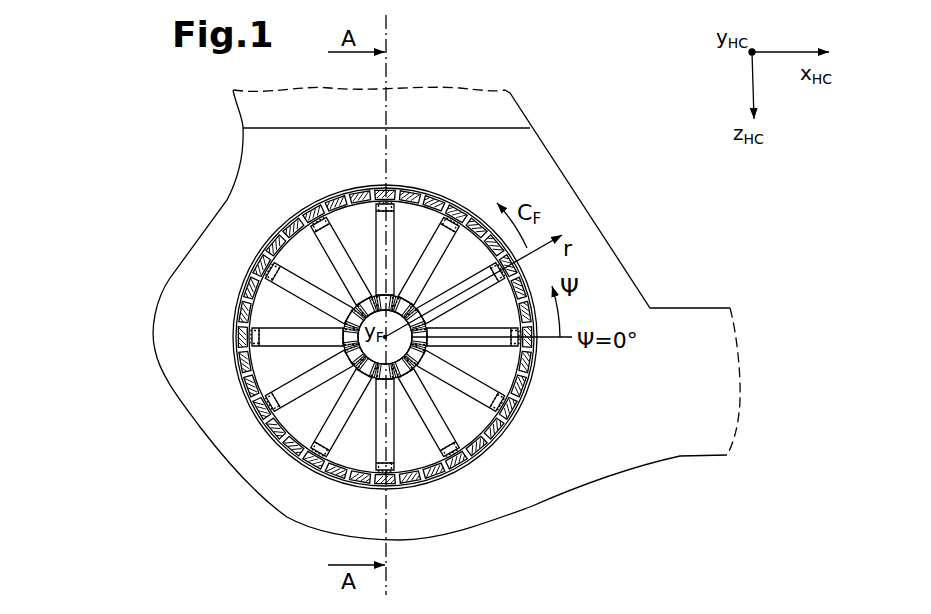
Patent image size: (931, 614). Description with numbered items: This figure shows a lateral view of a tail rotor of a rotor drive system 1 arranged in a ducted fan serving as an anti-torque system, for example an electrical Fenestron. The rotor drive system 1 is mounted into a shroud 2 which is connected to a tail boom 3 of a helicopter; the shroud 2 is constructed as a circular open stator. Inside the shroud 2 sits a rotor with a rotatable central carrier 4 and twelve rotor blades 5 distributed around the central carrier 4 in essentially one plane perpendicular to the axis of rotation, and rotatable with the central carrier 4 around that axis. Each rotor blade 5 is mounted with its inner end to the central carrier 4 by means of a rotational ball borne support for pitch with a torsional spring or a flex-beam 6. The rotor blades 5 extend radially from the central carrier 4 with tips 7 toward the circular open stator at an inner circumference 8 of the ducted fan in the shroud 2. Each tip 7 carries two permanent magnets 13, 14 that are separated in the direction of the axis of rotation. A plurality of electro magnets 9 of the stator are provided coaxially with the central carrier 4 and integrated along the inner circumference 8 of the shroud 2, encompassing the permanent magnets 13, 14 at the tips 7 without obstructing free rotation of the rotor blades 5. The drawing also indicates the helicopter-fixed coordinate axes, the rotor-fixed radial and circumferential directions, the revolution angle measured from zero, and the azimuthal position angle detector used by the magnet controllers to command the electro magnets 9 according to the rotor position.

The rotor drive system 1 is at (168, 137).
The shroud 2 is at (532, 163).
The tail boom 3 is at (700, 322).
The central carrier 4 is at (256, 390).
The rotor blades 5 is at (273, 314).
The flex-beam 6 is at (484, 400).
The tips 7 is at (385, 331).
The inner circumference 8 is at (329, 336).
The electro magnets 9 is at (385, 340).
The permanent magnet 13 is at (229, 406).
The permanent magnet 14 is at (385, 337).